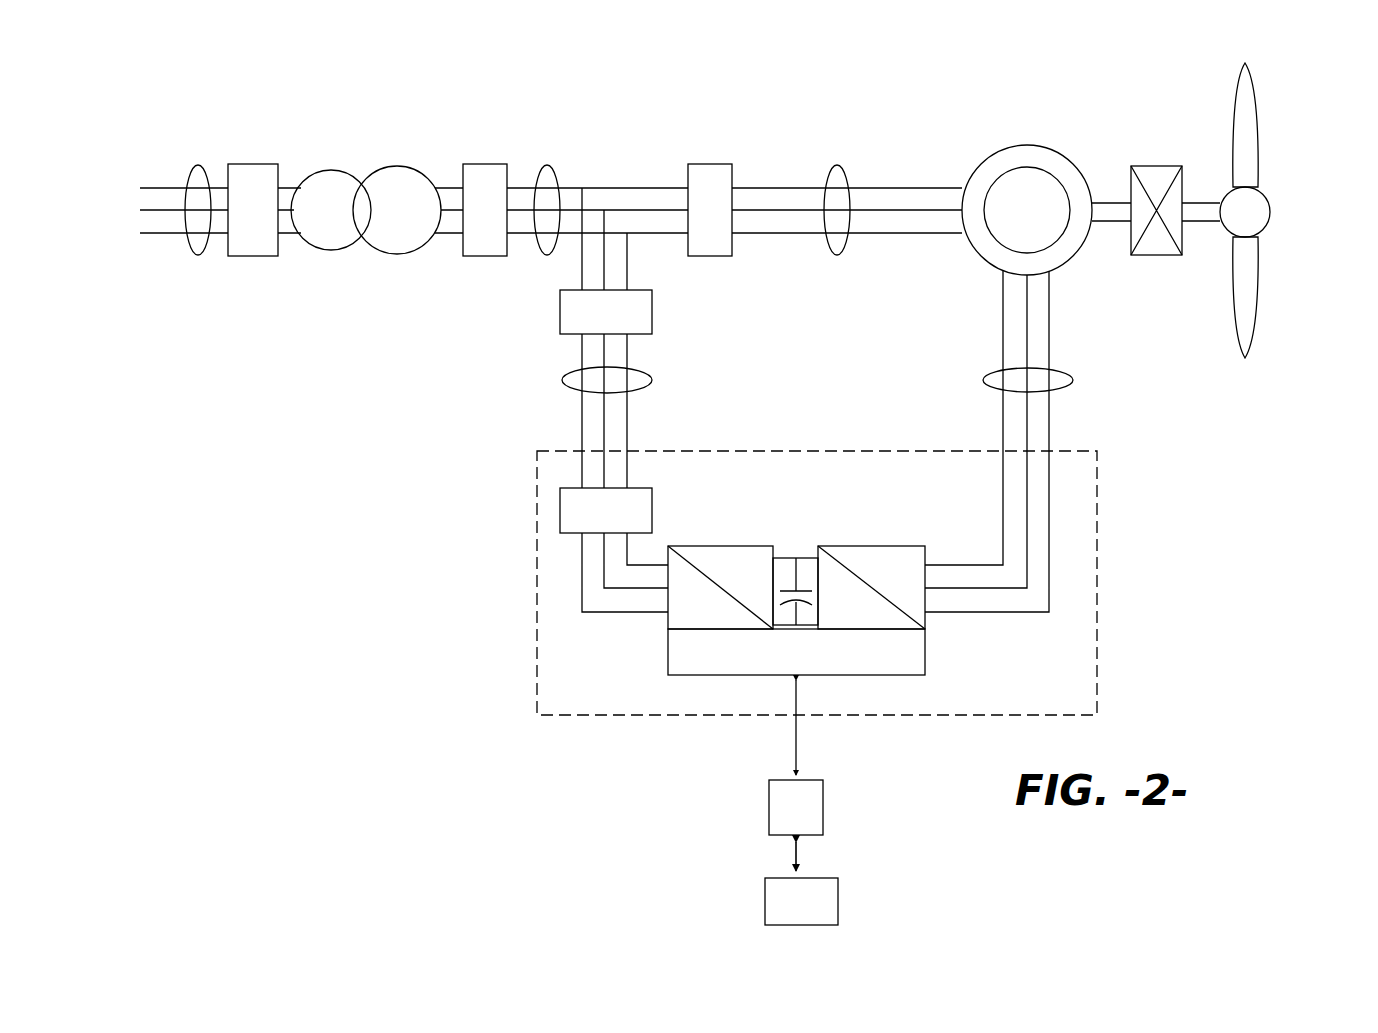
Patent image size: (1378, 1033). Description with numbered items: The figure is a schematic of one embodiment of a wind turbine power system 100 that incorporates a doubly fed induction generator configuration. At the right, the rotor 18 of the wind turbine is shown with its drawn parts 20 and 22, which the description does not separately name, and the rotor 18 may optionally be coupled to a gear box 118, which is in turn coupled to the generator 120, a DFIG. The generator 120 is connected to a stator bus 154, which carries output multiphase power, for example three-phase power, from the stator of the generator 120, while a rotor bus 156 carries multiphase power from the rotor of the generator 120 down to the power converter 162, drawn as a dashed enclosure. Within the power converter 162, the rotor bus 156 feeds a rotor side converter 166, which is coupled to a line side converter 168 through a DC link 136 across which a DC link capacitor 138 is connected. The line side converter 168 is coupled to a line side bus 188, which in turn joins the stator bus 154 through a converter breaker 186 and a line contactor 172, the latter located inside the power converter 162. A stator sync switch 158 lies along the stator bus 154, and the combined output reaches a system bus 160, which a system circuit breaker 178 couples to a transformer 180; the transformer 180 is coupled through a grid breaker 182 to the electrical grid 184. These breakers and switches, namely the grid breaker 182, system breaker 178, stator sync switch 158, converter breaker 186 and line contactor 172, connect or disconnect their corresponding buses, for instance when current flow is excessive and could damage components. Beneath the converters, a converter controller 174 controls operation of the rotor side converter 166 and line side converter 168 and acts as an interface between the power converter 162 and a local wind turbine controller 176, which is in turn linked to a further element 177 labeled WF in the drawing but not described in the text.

The rotor 18 is at (1292, 117).
The rotor hub 20 is at (1271, 204).
The rotor blades 22 is at (1259, 139).
The wind turbine power system 100 is at (405, 567).
The gear box 118 is at (1160, 166).
The generator 120 is at (1025, 145).
The DC link 136 is at (805, 555).
The DC link capacitor 138 is at (780, 590).
The stator bus 154 is at (838, 166).
The rotor bus 156 is at (1073, 380).
The stator sync switch 158 is at (710, 164).
The system bus 160 is at (549, 166).
The power converter 162 is at (1098, 550).
The rotor side converter 166 is at (925, 620).
The line side converter 168 is at (662, 617).
The line contactor 172 is at (560, 513).
The converter controller 174 is at (713, 677).
The local wind turbine controller 176 is at (825, 803).
The wind farm controller 177 is at (838, 902).
The system circuit breaker 178 is at (485, 164).
The transformer 180 is at (397, 166).
The grid breaker 182 is at (253, 164).
The electrical grid 184 is at (199, 165).
The converter breaker 186 is at (560, 318).
The line side bus 188 is at (563, 390).